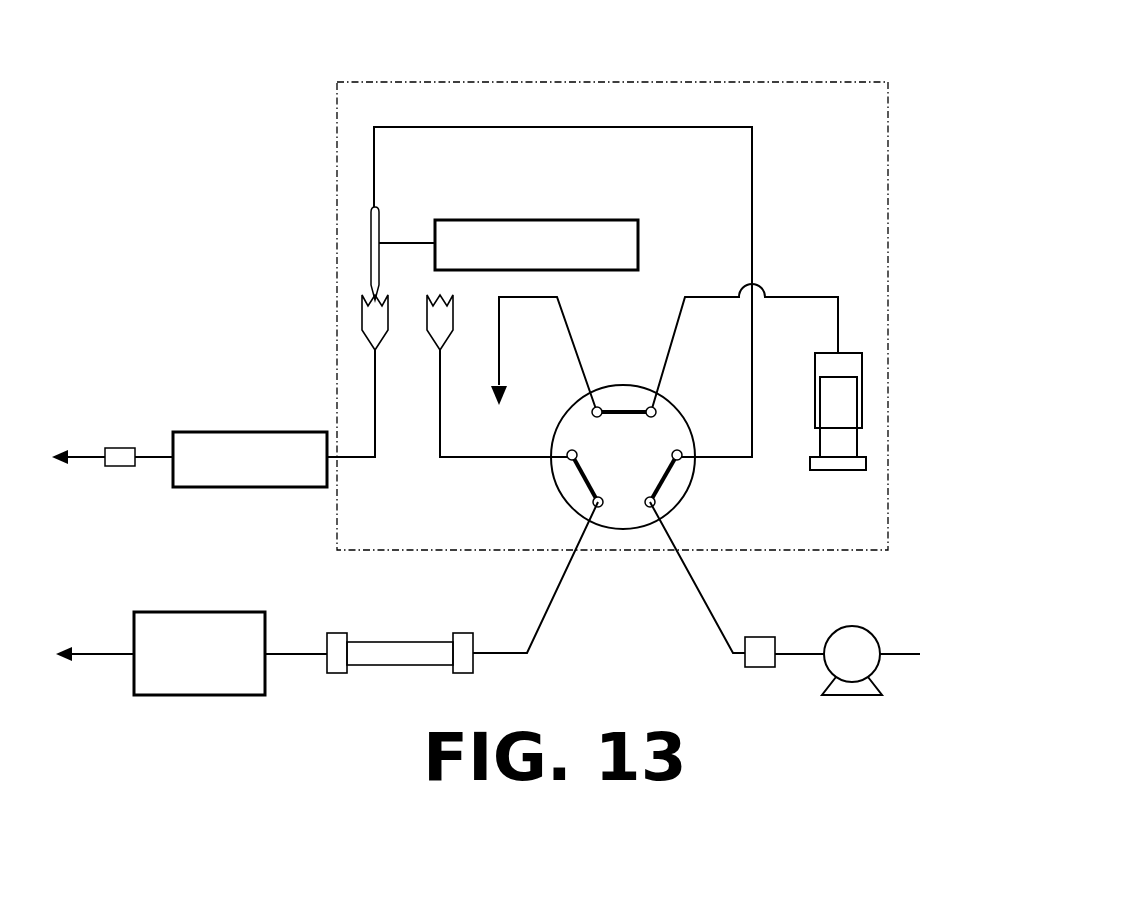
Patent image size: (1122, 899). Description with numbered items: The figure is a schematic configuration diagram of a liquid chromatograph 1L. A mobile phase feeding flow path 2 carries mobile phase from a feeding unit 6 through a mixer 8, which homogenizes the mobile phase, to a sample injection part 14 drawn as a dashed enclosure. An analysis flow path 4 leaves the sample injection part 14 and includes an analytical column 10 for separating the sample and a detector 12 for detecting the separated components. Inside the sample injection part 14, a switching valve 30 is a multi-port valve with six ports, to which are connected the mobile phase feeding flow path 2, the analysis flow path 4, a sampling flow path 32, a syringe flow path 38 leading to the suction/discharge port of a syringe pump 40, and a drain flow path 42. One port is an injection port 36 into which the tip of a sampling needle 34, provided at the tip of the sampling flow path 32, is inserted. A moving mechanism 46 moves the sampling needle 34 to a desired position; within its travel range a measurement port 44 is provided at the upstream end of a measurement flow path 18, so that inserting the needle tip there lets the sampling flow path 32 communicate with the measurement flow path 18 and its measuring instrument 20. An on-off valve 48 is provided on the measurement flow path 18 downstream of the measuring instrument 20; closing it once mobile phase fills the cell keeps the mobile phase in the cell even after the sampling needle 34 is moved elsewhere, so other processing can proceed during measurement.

The liquid chromatograph 1L is at (180, 43).
The sample injection part 14 is at (808, 80).
The sampling flow path 32 is at (755, 220).
The sampling needle 34 is at (371, 222).
The moving mechanism 46 is at (530, 219).
The measurement port 44 is at (362, 318).
The measurement flow path 18 is at (374, 402).
The injection port 36 is at (430, 345).
The drain flow path 42 is at (572, 331).
The syringe flow path 38 is at (800, 297).
The syringe pump 40 is at (862, 370).
The switching valve 30 is at (690, 486).
The measuring instrument 20 is at (278, 488).
The on-off valve 48 is at (121, 468).
The analysis flow path 4 is at (545, 626).
The analytical column 10 is at (410, 632).
The detector 12 is at (265, 617).
The mobile phase feeding flow path 2 is at (704, 621).
The mixer 8 is at (764, 636).
The feeding unit 6 is at (862, 630).